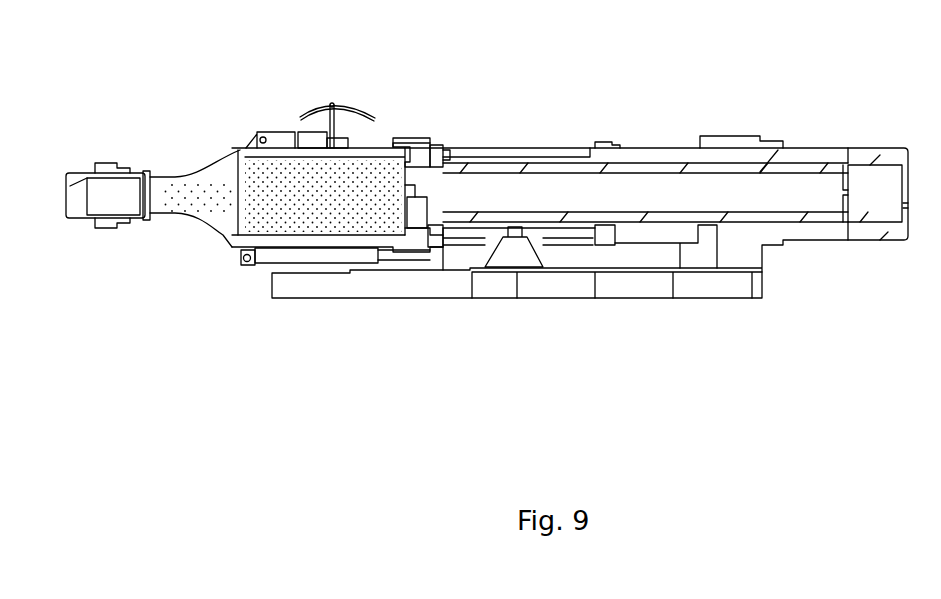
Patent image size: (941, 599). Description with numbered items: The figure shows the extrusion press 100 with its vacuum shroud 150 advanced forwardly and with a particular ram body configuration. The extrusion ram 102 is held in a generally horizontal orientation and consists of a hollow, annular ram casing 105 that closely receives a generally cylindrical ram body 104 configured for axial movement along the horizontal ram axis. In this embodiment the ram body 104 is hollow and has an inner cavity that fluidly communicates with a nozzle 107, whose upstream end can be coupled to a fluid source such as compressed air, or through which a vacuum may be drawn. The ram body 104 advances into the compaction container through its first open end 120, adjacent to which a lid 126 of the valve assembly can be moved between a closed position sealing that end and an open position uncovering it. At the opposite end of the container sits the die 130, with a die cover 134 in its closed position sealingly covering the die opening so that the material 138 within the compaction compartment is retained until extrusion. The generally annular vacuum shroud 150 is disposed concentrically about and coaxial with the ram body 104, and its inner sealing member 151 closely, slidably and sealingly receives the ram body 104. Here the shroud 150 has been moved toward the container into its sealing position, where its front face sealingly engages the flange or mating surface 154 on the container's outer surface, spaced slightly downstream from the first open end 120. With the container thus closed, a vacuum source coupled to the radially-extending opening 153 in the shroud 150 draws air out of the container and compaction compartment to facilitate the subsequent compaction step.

The extrusion press 100 is at (589, 118).
The extrusion ram 102 is at (580, 162).
The ram body 104 is at (680, 163).
The ram casing 105 is at (770, 155).
The nozzle 107 is at (415, 192).
The first open end 120 is at (420, 203).
The lid 126 is at (352, 110).
The die 130 is at (178, 175).
The die cover 134 is at (135, 197).
The material 138 is at (220, 180).
The vacuum shroud 150 is at (416, 137).
The inner sealing member 151 is at (443, 230).
The radially-extending opening 153 is at (437, 145).
The mating surface 154 is at (392, 137).